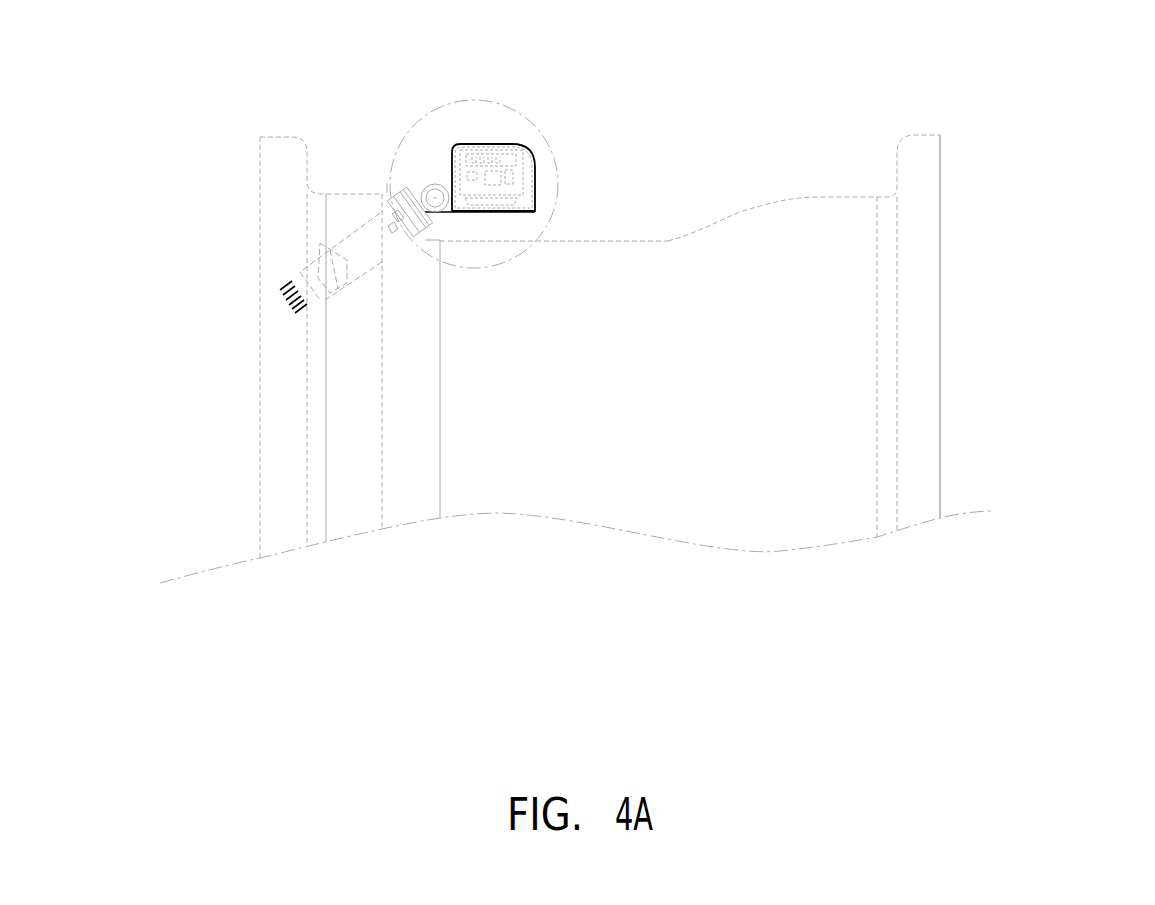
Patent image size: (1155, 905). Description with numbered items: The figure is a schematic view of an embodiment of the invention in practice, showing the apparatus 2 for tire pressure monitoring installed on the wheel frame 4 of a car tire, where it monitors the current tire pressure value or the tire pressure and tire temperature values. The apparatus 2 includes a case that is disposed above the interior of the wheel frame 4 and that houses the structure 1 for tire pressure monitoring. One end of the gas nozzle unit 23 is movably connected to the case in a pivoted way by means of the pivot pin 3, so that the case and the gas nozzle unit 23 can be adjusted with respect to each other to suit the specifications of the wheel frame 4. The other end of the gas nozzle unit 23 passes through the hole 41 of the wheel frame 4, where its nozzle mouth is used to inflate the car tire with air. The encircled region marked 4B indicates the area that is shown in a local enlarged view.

The structure for tire pressure monitoring 1 is at (527, 206).
The apparatus for tire pressure monitoring 2 is at (477, 137).
The pivot pin 3 is at (412, 193).
The wheel frame 4 is at (907, 208).
The detail circle 4B is at (523, 120).
The gas nozzle unit 23 is at (337, 240).
The hole 41 is at (400, 193).